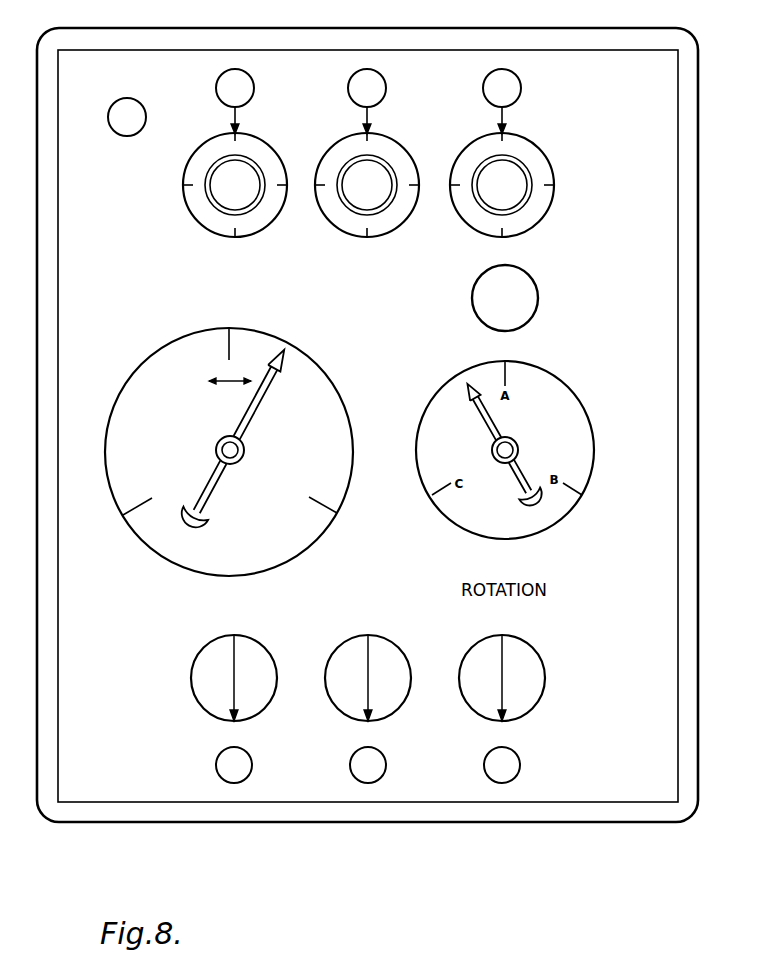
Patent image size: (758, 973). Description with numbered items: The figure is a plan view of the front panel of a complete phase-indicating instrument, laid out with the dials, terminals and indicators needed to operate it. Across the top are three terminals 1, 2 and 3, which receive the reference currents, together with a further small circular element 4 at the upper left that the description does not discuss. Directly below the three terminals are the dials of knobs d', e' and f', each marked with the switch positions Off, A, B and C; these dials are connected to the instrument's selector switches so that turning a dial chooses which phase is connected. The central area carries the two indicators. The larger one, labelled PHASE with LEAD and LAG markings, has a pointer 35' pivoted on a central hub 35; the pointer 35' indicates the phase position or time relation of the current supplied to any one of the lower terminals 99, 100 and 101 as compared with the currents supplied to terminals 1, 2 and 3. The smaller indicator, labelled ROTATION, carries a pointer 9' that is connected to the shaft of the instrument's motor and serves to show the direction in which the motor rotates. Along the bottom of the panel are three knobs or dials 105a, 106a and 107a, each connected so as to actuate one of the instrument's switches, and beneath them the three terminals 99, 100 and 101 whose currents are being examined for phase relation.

The terminal 1 is at (250, 88).
The terminal 2 is at (378, 85).
The terminal 3 is at (512, 82).
The indicating lamp 4 is at (140, 108).
The dial of knob d' is at (235, 196).
The dial of knob e' is at (367, 194).
The dial of knob f' is at (504, 192).
The phase indicator 35 is at (229, 468).
The pointer 35' is at (237, 437).
The pointer 9' is at (501, 444).
The knob or dial 105a is at (207, 685).
The knob or dial 106a is at (346, 701).
The knob or dial 107a is at (479, 699).
The terminal 99 is at (241, 771).
The terminal 100 is at (375, 771).
The terminal 101 is at (509, 771).